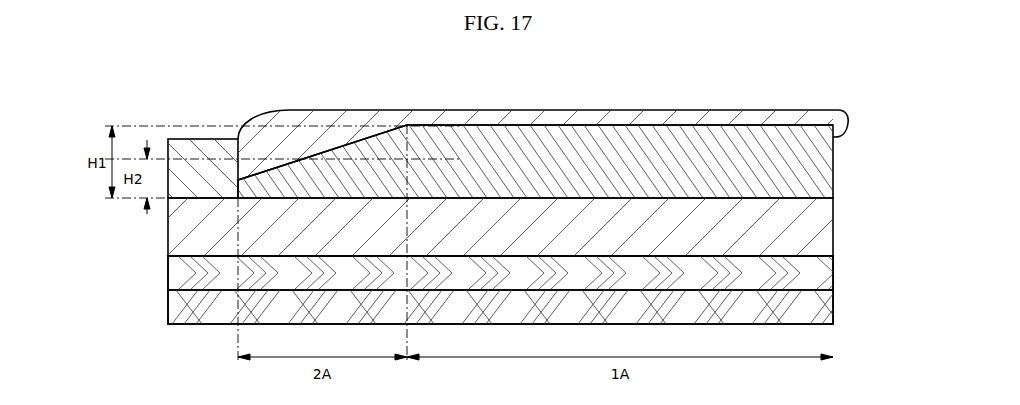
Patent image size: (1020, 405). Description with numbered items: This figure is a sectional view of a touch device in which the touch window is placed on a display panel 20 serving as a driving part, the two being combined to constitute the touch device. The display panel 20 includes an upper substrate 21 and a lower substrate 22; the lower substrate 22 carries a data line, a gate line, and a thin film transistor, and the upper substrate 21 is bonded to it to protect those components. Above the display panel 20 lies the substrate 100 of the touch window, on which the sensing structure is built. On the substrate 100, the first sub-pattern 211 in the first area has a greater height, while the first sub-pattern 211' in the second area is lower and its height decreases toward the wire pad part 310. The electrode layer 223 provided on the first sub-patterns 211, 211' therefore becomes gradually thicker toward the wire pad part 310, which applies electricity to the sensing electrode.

The wire pad part 310 is at (203, 147).
The electrode layer 223 is at (286, 128).
The first sub-pattern 211 is at (536, 136).
The first sub-pattern 211' is at (322, 132).
The substrate 100 is at (833, 228).
The upper substrate 21 is at (834, 272).
The lower substrate 22 is at (520, 307).
The display panel 20 is at (541, 290).